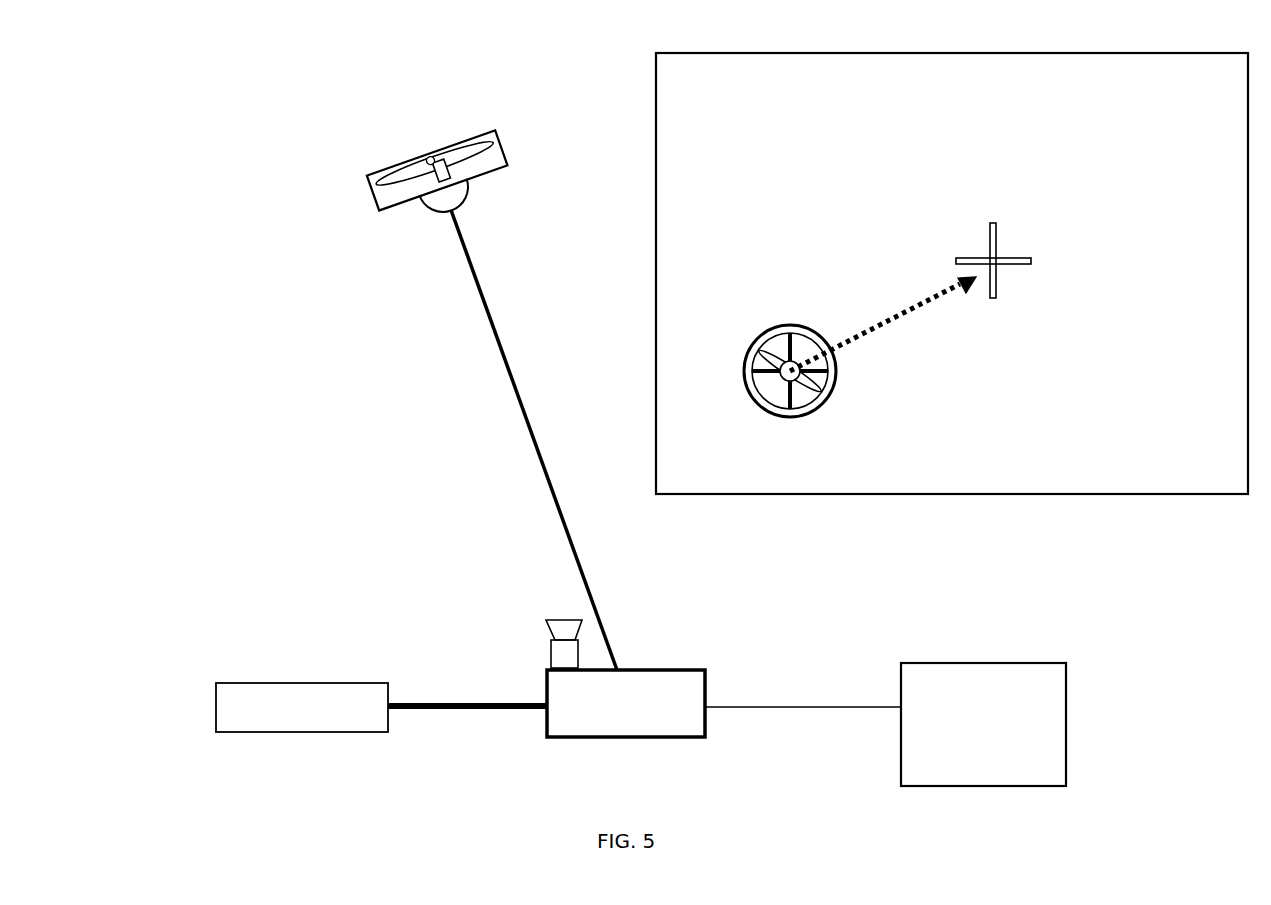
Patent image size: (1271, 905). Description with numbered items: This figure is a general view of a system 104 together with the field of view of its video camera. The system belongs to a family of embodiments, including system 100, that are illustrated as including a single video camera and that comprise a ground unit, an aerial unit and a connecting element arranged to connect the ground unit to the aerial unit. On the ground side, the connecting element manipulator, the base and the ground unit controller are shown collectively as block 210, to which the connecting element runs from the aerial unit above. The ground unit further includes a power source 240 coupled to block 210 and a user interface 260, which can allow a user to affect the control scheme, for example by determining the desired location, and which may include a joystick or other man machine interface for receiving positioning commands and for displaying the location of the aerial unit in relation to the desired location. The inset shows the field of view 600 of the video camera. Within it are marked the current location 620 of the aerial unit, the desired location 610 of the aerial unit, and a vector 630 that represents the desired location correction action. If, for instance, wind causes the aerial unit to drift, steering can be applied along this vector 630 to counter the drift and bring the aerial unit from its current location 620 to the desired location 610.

The system 100 is at (430, 132).
The system 104 is at (476, 822).
The ground unit controller, base and connecting element manipulator 210 is at (625, 678).
The power source 240 is at (381, 707).
The user interface 260 is at (885, 724).
The field of view 600 is at (880, 52).
The desired location 610 is at (997, 227).
The current location 620 is at (762, 331).
The vector 630 is at (902, 320).